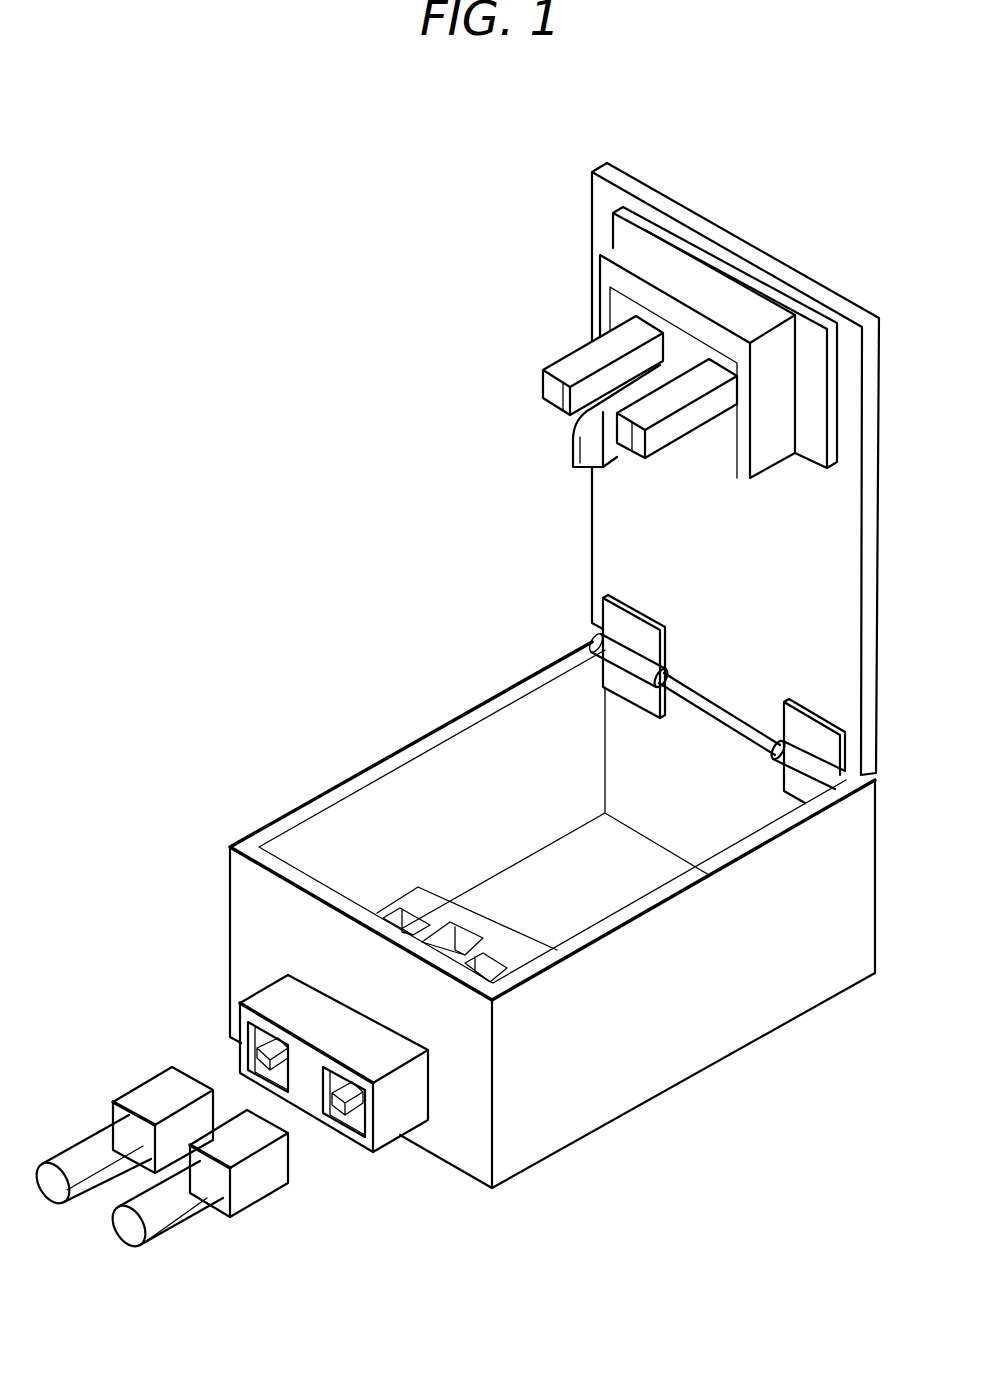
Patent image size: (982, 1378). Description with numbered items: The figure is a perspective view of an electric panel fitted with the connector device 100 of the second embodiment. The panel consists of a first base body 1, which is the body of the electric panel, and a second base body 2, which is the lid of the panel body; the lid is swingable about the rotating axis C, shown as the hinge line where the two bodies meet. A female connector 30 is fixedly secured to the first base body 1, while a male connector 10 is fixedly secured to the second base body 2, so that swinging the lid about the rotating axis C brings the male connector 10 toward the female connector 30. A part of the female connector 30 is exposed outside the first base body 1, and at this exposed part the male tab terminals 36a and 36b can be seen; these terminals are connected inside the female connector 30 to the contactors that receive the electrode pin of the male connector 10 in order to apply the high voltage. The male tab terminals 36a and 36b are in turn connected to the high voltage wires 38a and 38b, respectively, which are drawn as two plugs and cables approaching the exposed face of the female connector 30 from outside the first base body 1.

The connector device 100 is at (283, 433).
The first base body 1 is at (573, 1095).
The second base body 2 is at (633, 558).
The male connector 10 is at (533, 350).
The rotating axis C is at (727, 717).
The female connector 30 is at (387, 1168).
The male tab terminal 36a is at (267, 1060).
The male tab terminal 36b is at (342, 1107).
The high voltage wire 38a is at (92, 1152).
The high voltage wire 38b is at (180, 1202).